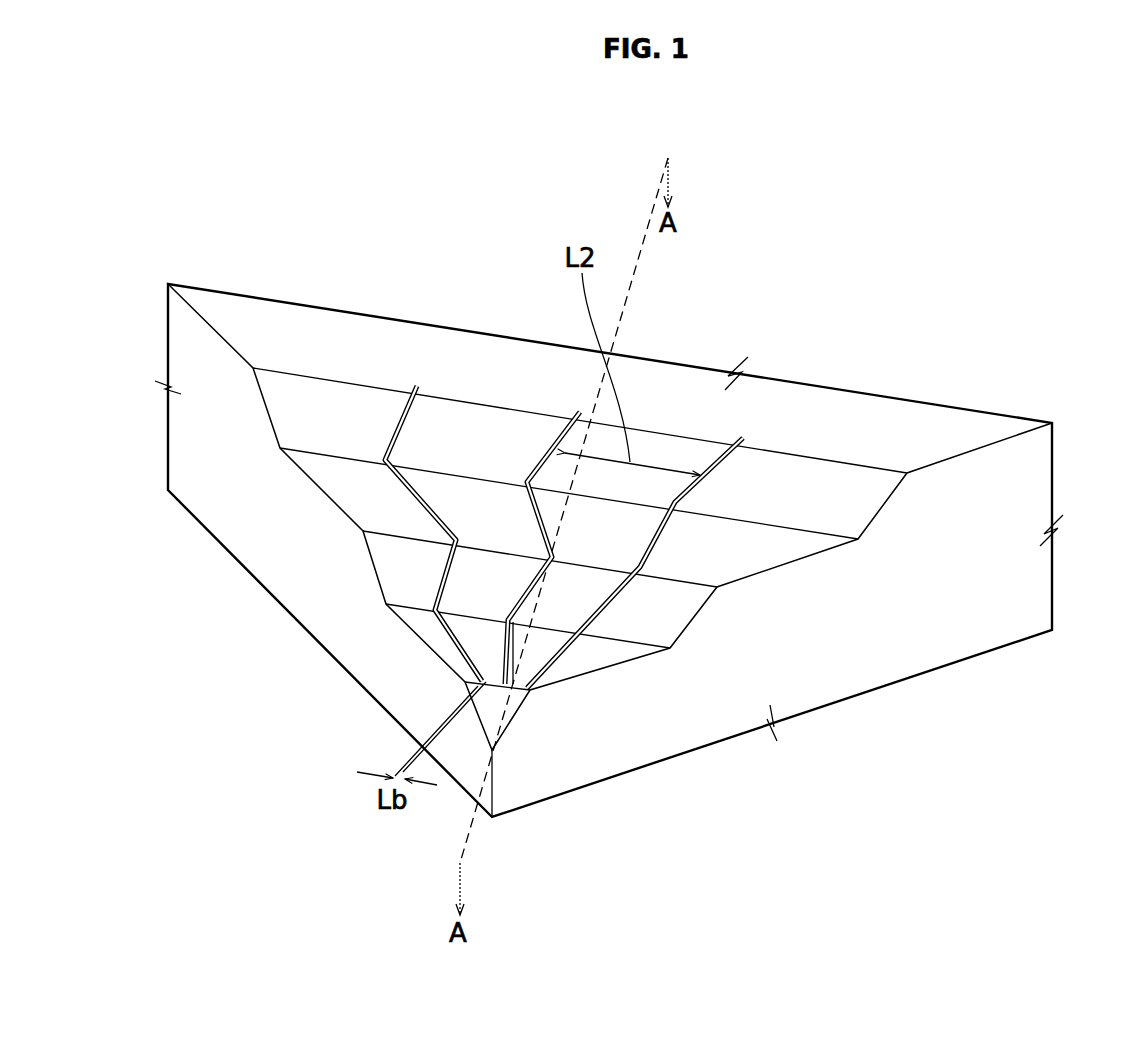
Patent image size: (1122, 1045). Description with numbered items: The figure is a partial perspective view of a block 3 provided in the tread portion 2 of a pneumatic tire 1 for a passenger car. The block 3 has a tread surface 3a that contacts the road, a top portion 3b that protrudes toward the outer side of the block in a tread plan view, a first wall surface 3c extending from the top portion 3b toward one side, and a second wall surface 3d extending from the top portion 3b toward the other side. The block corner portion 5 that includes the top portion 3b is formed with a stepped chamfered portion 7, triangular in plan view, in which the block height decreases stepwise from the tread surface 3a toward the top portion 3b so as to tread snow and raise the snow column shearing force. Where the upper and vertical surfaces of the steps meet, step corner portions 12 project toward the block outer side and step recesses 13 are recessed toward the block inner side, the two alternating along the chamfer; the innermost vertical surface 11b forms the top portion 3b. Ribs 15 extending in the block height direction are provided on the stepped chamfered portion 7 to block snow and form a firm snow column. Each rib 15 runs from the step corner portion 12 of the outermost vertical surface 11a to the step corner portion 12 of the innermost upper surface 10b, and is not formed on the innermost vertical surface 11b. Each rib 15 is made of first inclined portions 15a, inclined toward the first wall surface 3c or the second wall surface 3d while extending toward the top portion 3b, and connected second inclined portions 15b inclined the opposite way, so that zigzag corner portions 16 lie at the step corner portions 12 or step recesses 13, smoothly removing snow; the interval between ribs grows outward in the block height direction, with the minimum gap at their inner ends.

The tire 1 is at (907, 187).
The tread portion 2 is at (818, 225).
The block 3 is at (727, 260).
The tread surface 3a is at (932, 430).
The top portion 3b is at (493, 757).
The first wall surface 3c is at (898, 655).
The second wall surface 3d is at (255, 515).
The block corner portion 5 is at (255, 417).
The stepped chamfered portion 7 is at (437, 588).
The innermost upper surface 10b is at (440, 642).
The outermost vertical surface 11a is at (807, 477).
The innermost vertical surface 11b is at (493, 718).
The step corner portion 12 is at (303, 373).
The step recess 13 is at (823, 533).
The rib 15 is at (399, 510).
The first inclined portion 15a is at (395, 422).
The second inclined portion 15b is at (413, 496).
The zigzag corner portion 16 is at (677, 503).